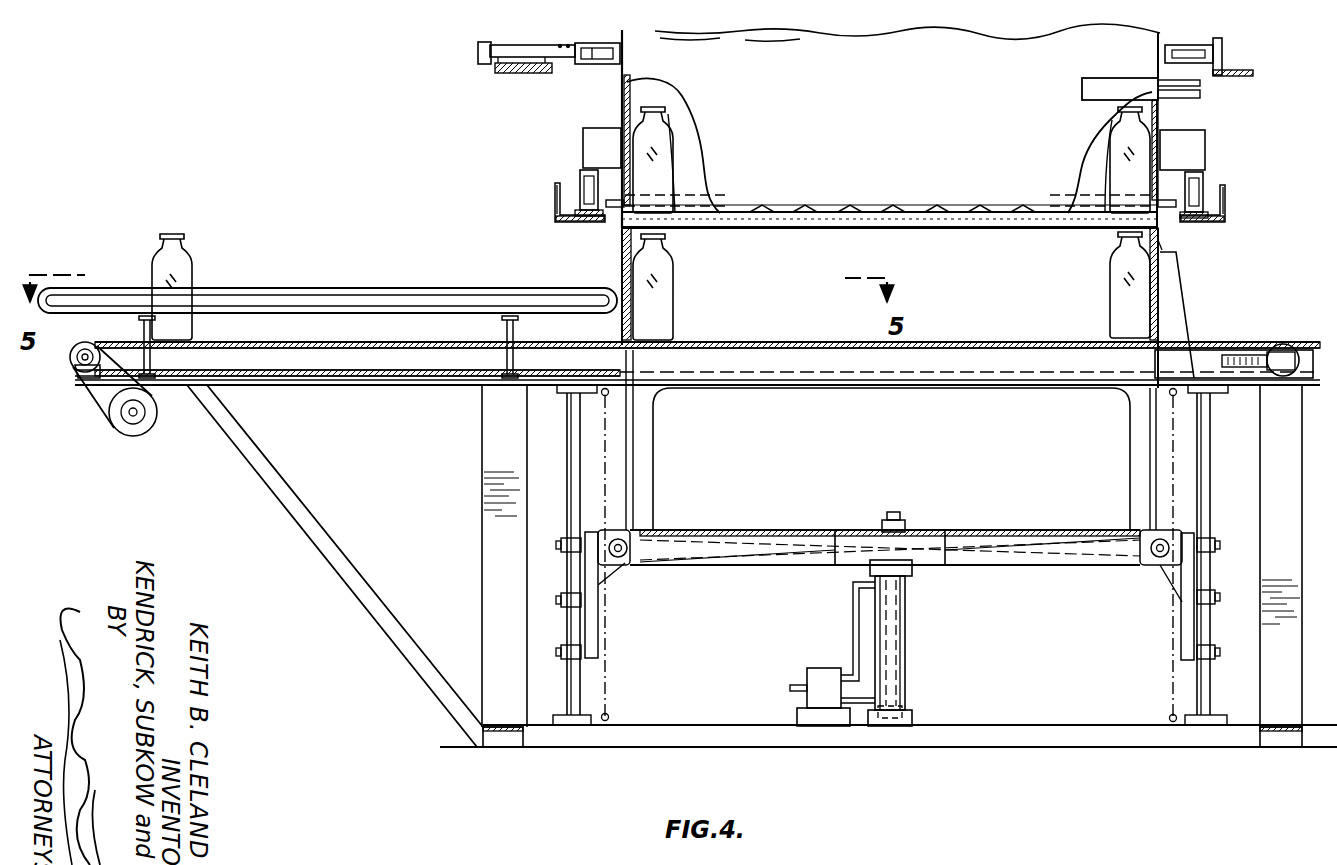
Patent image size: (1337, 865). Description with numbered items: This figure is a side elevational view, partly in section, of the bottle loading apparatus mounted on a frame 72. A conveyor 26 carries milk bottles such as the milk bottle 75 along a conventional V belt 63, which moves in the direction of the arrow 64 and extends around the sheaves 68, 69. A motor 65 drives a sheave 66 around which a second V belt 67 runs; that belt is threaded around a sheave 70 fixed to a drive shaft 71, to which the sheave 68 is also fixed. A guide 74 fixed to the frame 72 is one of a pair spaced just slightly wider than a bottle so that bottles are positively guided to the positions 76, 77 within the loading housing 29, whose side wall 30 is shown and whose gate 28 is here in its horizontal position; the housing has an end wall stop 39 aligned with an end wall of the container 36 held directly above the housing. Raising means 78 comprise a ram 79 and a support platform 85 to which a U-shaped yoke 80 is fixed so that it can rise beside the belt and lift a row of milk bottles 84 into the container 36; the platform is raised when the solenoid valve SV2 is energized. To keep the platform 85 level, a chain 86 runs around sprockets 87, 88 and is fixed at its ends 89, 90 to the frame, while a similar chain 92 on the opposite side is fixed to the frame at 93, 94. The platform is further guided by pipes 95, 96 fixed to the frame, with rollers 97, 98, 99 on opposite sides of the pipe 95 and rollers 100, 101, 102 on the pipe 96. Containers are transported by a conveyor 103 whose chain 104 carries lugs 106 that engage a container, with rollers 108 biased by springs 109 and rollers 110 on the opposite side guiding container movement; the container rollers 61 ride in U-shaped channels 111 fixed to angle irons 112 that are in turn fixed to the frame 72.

The conveyor 26 is at (92, 407).
The gate 28 is at (622, 282).
The loading housing 29 is at (1165, 246).
The side wall 30 is at (1056, 308).
The container 36 is at (621, 100).
The end wall stop 39 is at (1150, 294).
The container rollers 61 is at (587, 193).
The V belt 63 is at (395, 343).
The arrow 64 is at (330, 333).
The motor 65 is at (158, 420).
The sheave 66 is at (140, 416).
The V belt 67 is at (106, 426).
The sheave 68 is at (70, 356).
The sheave 69 is at (1277, 347).
The sheave 70 is at (85, 377).
The drive shaft 71 is at (89, 354).
The frame 72 is at (432, 680).
The guide 74 is at (388, 288).
The milk bottle 75 is at (195, 274).
The milk bottle position 76 is at (673, 308).
The milk bottle position 77 is at (1108, 300).
The raising means 78 is at (883, 643).
The ram 79 is at (905, 616).
The U-shaped yoke 80 is at (655, 460).
The row of milk bottles 84 is at (665, 118).
The support platform 85 is at (926, 530).
The chain 86 is at (755, 558).
The sprocket 87 is at (634, 562).
The sprocket 88 is at (1149, 553).
The chain end 89 is at (610, 395).
The chain end 90 is at (1170, 714).
The chain 92 is at (735, 532).
The chain fixing point 93 is at (608, 714).
The chain fixing point 94 is at (1170, 394).
The pipe 95 is at (575, 406).
The pipe 96 is at (1212, 410).
The roller 97 is at (568, 538).
The roller 98 is at (572, 595).
The roller 99 is at (570, 664).
The roller 100 is at (1218, 540).
The roller 101 is at (1218, 600).
The roller 102 is at (1218, 656).
The conveyor 103 is at (1200, 104).
The chain 104 is at (1203, 92).
The lugs 106 is at (1118, 88).
The rollers 108 is at (620, 76).
The springs 109 is at (552, 70).
The rollers 110 is at (1188, 67).
The U-shaped channel 111 is at (566, 214).
The angle iron 112 is at (556, 201).
The solenoid valve SV2 is at (814, 674).